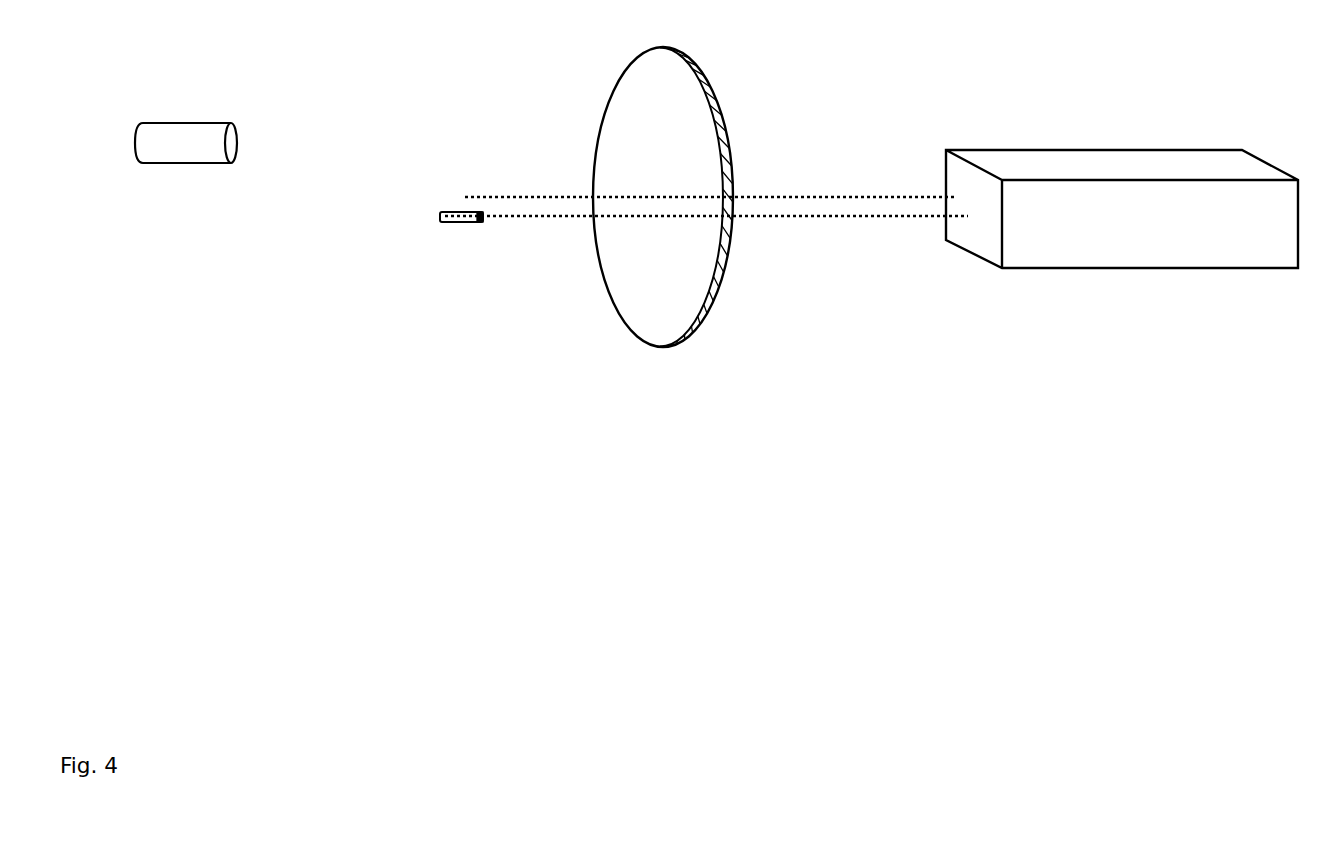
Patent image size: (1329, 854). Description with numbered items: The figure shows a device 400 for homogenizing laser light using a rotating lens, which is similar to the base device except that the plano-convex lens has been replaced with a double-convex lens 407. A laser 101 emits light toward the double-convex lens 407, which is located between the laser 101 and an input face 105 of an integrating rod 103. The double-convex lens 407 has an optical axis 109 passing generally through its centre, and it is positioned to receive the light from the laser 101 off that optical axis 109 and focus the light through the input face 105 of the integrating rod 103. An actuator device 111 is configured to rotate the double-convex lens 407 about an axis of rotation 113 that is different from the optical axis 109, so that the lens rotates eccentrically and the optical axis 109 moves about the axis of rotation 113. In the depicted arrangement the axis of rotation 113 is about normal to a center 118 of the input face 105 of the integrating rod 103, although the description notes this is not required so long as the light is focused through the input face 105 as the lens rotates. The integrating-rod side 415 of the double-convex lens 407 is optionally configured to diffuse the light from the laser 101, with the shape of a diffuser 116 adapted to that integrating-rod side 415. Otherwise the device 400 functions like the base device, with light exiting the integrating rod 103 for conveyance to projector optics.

The device 400 is at (250, 364).
The laser 101 is at (215, 163).
The optical axis 109 is at (465, 197).
The actuator device 111 is at (465, 220).
The axis of rotation 113 is at (586, 216).
The double-convex lens 407 is at (632, 328).
The integrating-rod side 415 is at (705, 64).
The diffuser 116 is at (702, 332).
The integrating rod 103 is at (1170, 262).
The input face 105 is at (995, 253).
The center 118 is at (972, 208).